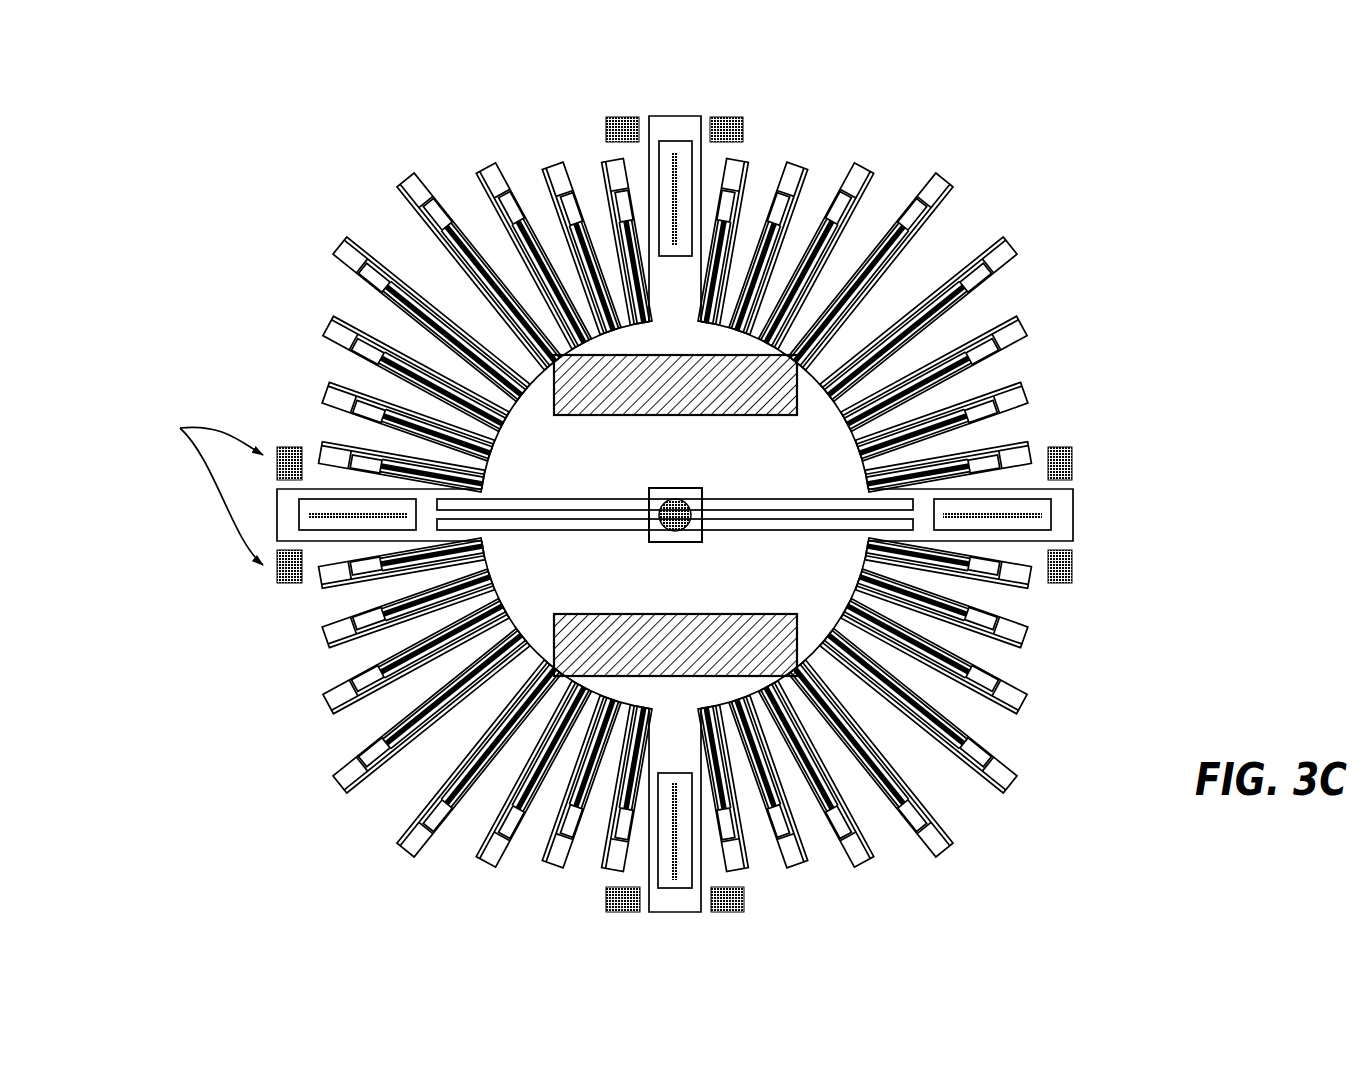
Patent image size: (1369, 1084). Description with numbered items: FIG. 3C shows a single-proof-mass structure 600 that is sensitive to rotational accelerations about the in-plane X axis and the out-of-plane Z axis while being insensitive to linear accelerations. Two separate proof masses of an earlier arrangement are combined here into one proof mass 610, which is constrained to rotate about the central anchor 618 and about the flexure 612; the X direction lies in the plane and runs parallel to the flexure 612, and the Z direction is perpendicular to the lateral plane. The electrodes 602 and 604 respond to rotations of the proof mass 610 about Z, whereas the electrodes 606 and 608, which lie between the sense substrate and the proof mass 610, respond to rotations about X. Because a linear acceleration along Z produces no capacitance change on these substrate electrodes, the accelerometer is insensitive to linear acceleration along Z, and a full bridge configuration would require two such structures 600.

The gyroscope / sensor structure 600 is at (298, 196).
The electrode 602 is at (877, 237).
The electrode 604 is at (905, 260).
The electrode 606 is at (757, 386).
The electrode 608 is at (707, 655).
The proof mass 610 is at (558, 598).
The flexure 612 is at (557, 497).
The anchor 618 is at (693, 538).